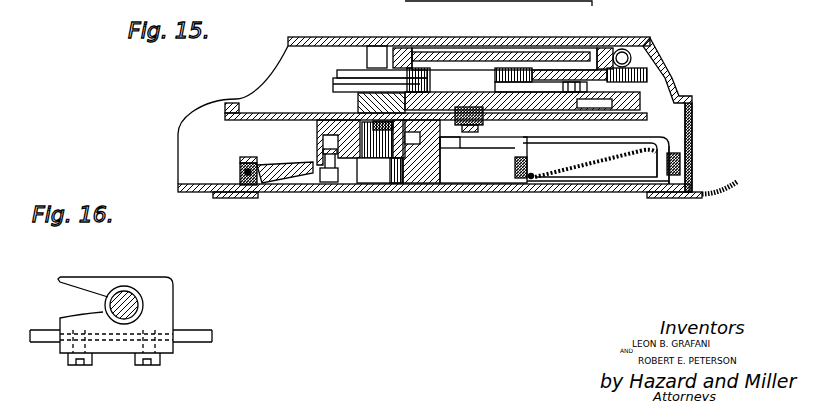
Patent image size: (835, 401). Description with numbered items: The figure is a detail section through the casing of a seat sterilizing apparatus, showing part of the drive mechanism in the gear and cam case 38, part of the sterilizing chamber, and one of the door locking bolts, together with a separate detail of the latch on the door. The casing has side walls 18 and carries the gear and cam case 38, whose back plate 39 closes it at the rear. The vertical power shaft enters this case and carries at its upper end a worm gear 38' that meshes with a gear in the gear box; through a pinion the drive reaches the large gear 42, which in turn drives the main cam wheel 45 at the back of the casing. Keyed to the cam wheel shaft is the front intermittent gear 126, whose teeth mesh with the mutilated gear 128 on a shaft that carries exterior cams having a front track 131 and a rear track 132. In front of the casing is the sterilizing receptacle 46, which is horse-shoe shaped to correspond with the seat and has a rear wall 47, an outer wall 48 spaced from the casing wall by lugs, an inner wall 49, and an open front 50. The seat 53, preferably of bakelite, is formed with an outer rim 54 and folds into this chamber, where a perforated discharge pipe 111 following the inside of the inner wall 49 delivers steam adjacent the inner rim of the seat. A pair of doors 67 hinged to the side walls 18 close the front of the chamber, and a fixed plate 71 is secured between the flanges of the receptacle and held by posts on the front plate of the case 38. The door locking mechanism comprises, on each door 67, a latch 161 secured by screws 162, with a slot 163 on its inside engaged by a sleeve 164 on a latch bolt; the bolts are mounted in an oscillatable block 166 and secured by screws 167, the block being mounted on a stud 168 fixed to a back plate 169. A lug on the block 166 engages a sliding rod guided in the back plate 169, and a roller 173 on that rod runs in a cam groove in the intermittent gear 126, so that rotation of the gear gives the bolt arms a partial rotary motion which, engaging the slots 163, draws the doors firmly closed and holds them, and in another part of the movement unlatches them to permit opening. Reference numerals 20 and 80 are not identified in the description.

In FIG. 15, the side walls 18 is at (692, 122).
In FIG. 15, the casing 20 is at (495, 37).
In FIG. 15, the gear and cam case 38 is at (675, 115).
In FIG. 15, the worm gear 38' is at (655, 44).
In FIG. 15, the back plate 39 is at (330, 38).
In FIG. 15, the large gear 42 is at (646, 82).
In FIG. 15, the main cam wheel 45 is at (592, 47).
In FIG. 15, the sterilizing receptacle 46 is at (553, 150).
In FIG. 15, the rear wall 47 is at (622, 139).
In FIG. 15, the outer wall 48 is at (673, 155).
In FIG. 15, the inner wall 49 is at (515, 166).
In FIG. 15, the open front 50 is at (578, 181).
In FIG. 15, the seat 53 is at (628, 160).
In FIG. 15, the outer rim 54 is at (662, 183).
In FIG. 15, the doors 67 is at (193, 192).
In FIG. 15, the fixed plate 71 is at (473, 190).
In FIG. 15, the strip 80 is at (703, 198).
In FIG. 15, the perforated discharge pipe 111 is at (530, 178).
In FIG. 15, the front intermittent gear 126 is at (480, 98).
In FIG. 15, the mutilated gear 128 is at (405, 97).
In FIG. 15, the front track 131 is at (347, 88).
In FIG. 15, the rear track 132 is at (348, 73).
In FIG. 15, the latch 161 is at (250, 198).
In FIG. 16, the latch 161 is at (160, 298).
In FIG. 16, the screws 162 is at (157, 357).
In FIG. 15, the slot 163 is at (285, 172).
In FIG. 16, the slot 163 is at (95, 295).
In FIG. 15, the sleeves 164 is at (242, 163).
In FIG. 16, the sleeves 164 is at (132, 292).
In FIG. 15, the oscillatable block 166 is at (417, 183).
In FIG. 15, the screws 167 is at (325, 182).
In FIG. 15, the stud 168 is at (378, 178).
In FIG. 15, the back plate 169 is at (317, 122).
In FIG. 15, the roller 173 is at (463, 107).